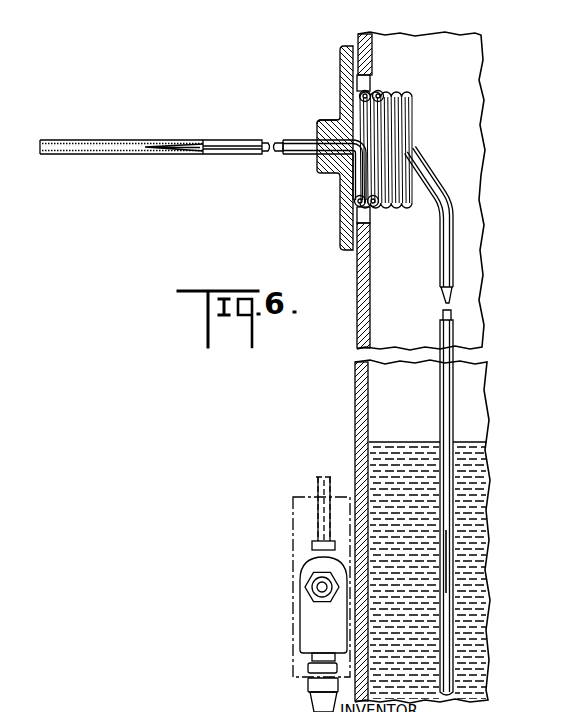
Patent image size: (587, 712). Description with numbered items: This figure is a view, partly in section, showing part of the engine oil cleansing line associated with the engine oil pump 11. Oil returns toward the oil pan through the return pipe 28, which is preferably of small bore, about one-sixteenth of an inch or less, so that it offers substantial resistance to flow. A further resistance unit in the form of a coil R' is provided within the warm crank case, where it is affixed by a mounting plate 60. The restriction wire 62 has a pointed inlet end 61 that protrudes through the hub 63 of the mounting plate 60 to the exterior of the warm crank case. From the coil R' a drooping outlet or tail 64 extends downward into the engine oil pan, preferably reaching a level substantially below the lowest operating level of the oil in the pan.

The return pipe 28 is at (64, 156).
The pointed inlet end 61 is at (163, 152).
The restriction wire 62 is at (202, 152).
The hub 63 is at (320, 121).
The mounting plate 60 is at (339, 211).
The drooping outlet or tail 64 is at (440, 330).
The resistance unit coil R' is at (386, 134).
The engine oil pump 11 is at (293, 546).